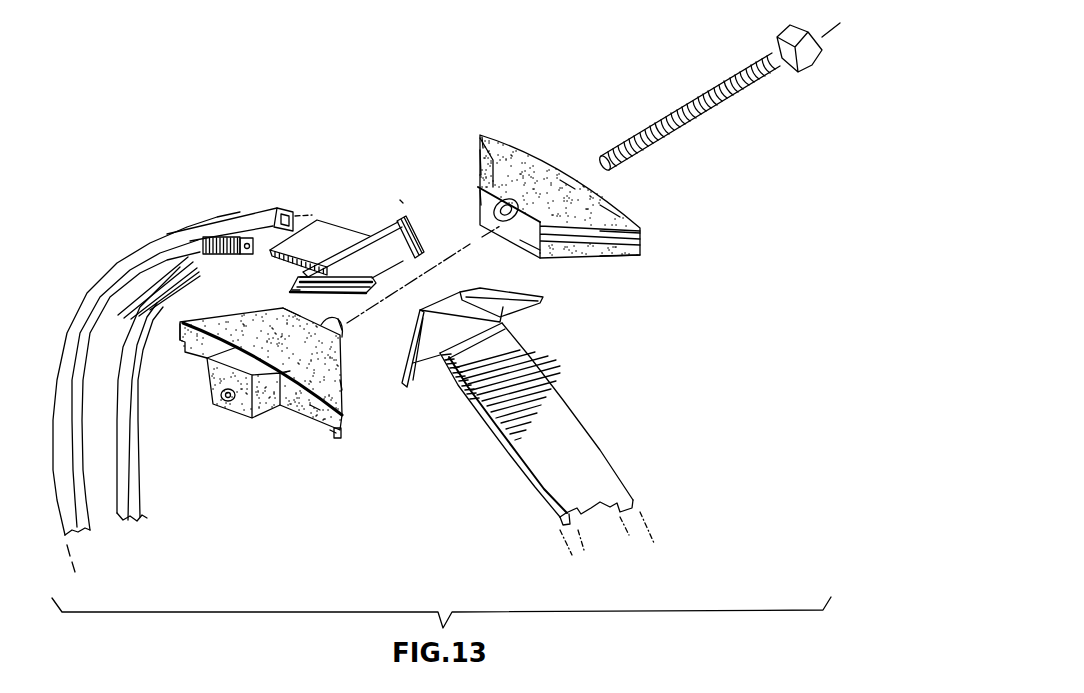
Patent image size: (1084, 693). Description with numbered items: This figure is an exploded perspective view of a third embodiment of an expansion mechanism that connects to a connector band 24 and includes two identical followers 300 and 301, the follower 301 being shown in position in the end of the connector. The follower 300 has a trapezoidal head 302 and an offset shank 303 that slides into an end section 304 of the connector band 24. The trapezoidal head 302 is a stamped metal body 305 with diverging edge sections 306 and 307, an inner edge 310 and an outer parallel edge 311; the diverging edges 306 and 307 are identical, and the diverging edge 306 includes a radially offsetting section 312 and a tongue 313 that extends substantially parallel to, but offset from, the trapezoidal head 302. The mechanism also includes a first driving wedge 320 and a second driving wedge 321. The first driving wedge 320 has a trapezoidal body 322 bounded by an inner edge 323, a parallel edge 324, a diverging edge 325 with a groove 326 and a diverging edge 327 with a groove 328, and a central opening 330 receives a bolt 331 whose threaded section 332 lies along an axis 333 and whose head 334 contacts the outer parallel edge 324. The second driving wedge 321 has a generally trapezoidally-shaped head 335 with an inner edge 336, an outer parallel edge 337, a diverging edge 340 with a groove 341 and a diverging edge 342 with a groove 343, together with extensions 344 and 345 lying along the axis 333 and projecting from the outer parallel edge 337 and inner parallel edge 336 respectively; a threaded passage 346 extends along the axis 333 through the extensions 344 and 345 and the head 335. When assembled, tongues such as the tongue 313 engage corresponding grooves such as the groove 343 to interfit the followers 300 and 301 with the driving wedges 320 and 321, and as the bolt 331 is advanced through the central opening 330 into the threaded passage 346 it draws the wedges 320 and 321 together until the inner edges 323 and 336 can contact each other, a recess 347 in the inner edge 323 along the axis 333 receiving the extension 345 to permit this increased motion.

The connector band 24 is at (268, 505).
The follower 300 is at (401, 193).
The follower 301 is at (552, 297).
The trapezoidal head 302 is at (387, 236).
The offset shank 303 is at (327, 252).
The end section 304 is at (222, 213).
The stamped metal body 305 is at (380, 265).
The diverging edge section 306 is at (347, 292).
The diverging edge section 307 is at (405, 241).
The inner edge 310 is at (376, 272).
The outer parallel edge 311 is at (325, 265).
The radially offsetting section 312 is at (412, 300).
The tongue 313 is at (293, 284).
The first driving wedge 320 is at (522, 145).
The second driving wedge 321 is at (352, 390).
The trapezoidal body 322 is at (566, 190).
The inner edge 323 is at (528, 243).
The parallel edge 324 is at (610, 207).
The diverging edge 325 is at (641, 252).
The groove 326 is at (643, 234).
The diverging edge 327 is at (479, 165).
The groove 328 is at (480, 199).
The central opening 330 is at (506, 206).
The bolt 331 is at (740, 74).
The threaded section 332 is at (713, 115).
The axis 333 is at (825, 42).
The head 334 is at (786, 42).
The trapezoidally-shaped head 335 is at (303, 375).
The inner edge 336 is at (287, 304).
The outer parallel edge 337 is at (317, 412).
The diverging edge 340 is at (342, 408).
The groove 341 is at (333, 440).
The diverging edge 342 is at (230, 312).
The groove 343 is at (180, 330).
The extension 344 is at (230, 428).
The extension 345 is at (342, 345).
The threaded passage 346 is at (221, 396).
The recess 347 is at (483, 148).